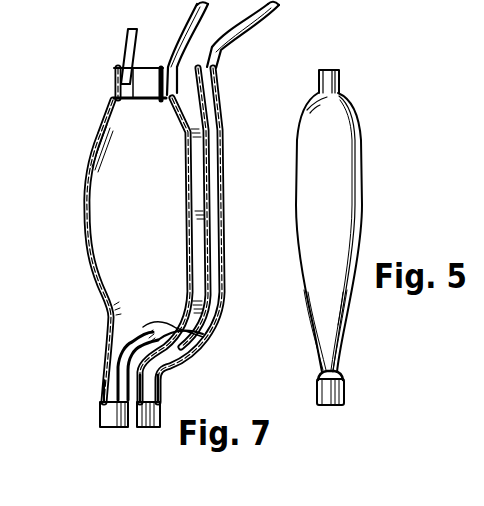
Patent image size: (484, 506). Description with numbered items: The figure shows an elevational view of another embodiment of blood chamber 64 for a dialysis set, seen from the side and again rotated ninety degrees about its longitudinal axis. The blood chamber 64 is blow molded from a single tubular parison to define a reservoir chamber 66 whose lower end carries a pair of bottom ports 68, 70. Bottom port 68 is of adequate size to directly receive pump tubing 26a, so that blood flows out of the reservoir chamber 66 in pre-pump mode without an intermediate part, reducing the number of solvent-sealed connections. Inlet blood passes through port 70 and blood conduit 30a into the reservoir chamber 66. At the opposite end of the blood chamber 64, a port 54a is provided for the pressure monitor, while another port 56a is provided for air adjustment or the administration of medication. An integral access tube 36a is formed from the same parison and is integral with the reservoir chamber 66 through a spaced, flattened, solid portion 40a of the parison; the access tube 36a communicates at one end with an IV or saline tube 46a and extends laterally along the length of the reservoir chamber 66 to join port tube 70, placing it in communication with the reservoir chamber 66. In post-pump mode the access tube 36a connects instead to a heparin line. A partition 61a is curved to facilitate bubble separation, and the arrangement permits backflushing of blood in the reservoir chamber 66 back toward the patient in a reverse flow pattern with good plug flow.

In FIG. 7, the pump tubing 26a is at (110, 417).
In FIG. 7, the blood conduit 30a is at (143, 424).
In FIG. 7, the integral access tube 36a is at (211, 117).
In FIG. 7, the flattened, solid portion 40a is at (197, 159).
In FIG. 7, the IV or saline tube 46a is at (239, 27).
In FIG. 7, the port 54a is at (123, 64).
In FIG. 5, the port 54a is at (342, 78).
In FIG. 7, the port 56a is at (166, 70).
In FIG. 7, the partition 61a is at (205, 336).
In FIG. 7, the blood chamber 64 is at (76, 190).
In FIG. 5, the blood chamber 64 is at (368, 183).
In FIG. 7, the reservoir chamber 66 is at (154, 200).
In FIG. 7, the bottom port 68 is at (104, 390).
In FIG. 5, the bottom port 68 is at (345, 390).
In FIG. 7, the bottom port 70 is at (150, 388).